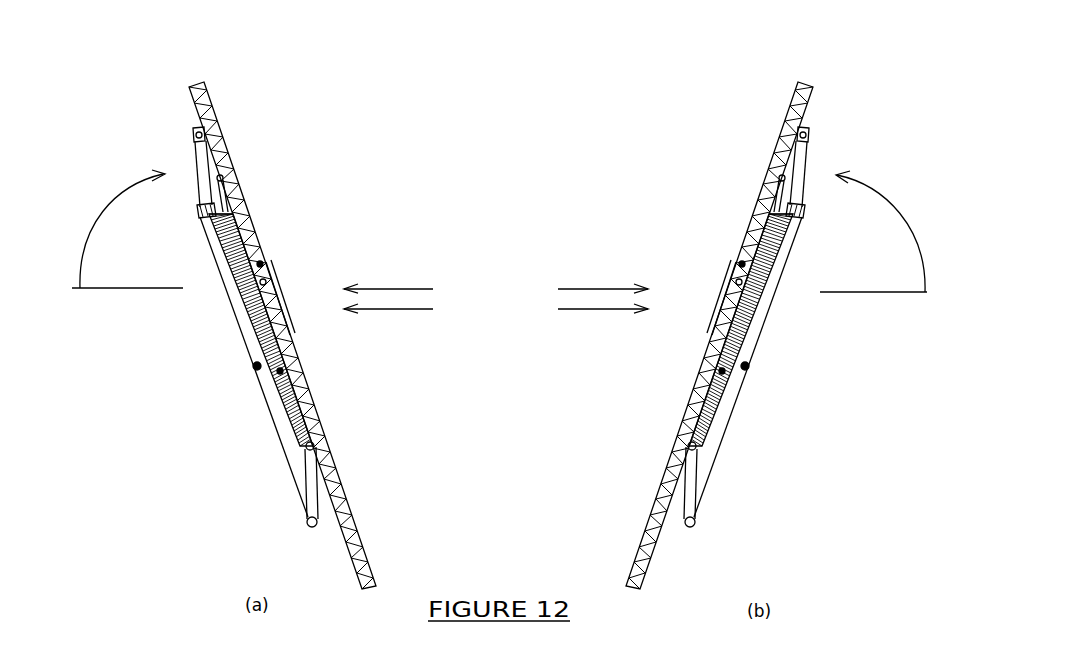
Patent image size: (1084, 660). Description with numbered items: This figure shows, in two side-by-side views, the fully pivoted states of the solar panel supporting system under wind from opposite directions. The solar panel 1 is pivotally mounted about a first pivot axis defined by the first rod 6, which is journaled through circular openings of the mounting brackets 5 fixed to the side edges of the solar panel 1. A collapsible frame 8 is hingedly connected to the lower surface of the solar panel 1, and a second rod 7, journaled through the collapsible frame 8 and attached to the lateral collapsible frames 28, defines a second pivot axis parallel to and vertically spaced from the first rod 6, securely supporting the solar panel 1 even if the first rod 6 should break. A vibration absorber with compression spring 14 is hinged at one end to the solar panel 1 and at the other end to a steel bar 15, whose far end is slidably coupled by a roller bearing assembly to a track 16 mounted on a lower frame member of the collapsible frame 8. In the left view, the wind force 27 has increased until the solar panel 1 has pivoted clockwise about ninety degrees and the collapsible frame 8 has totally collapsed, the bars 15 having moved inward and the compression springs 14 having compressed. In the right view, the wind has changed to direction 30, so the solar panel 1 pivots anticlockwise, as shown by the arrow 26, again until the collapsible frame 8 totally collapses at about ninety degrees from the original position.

The solar panel 1 is at (205, 84).
The mounting brackets 5 is at (261, 264).
The first rod 6 is at (264, 282).
The second rod 7 is at (258, 366).
The collapsible frame 8 is at (193, 136).
The compression spring 14 is at (284, 318).
The bar 15 is at (281, 372).
The track 16 is at (245, 308).
The arrow 26 is at (898, 210).
The wind force 27 is at (372, 288).
The lateral collapsible frames 28 is at (104, 215).
The wind direction 30 is at (622, 288).